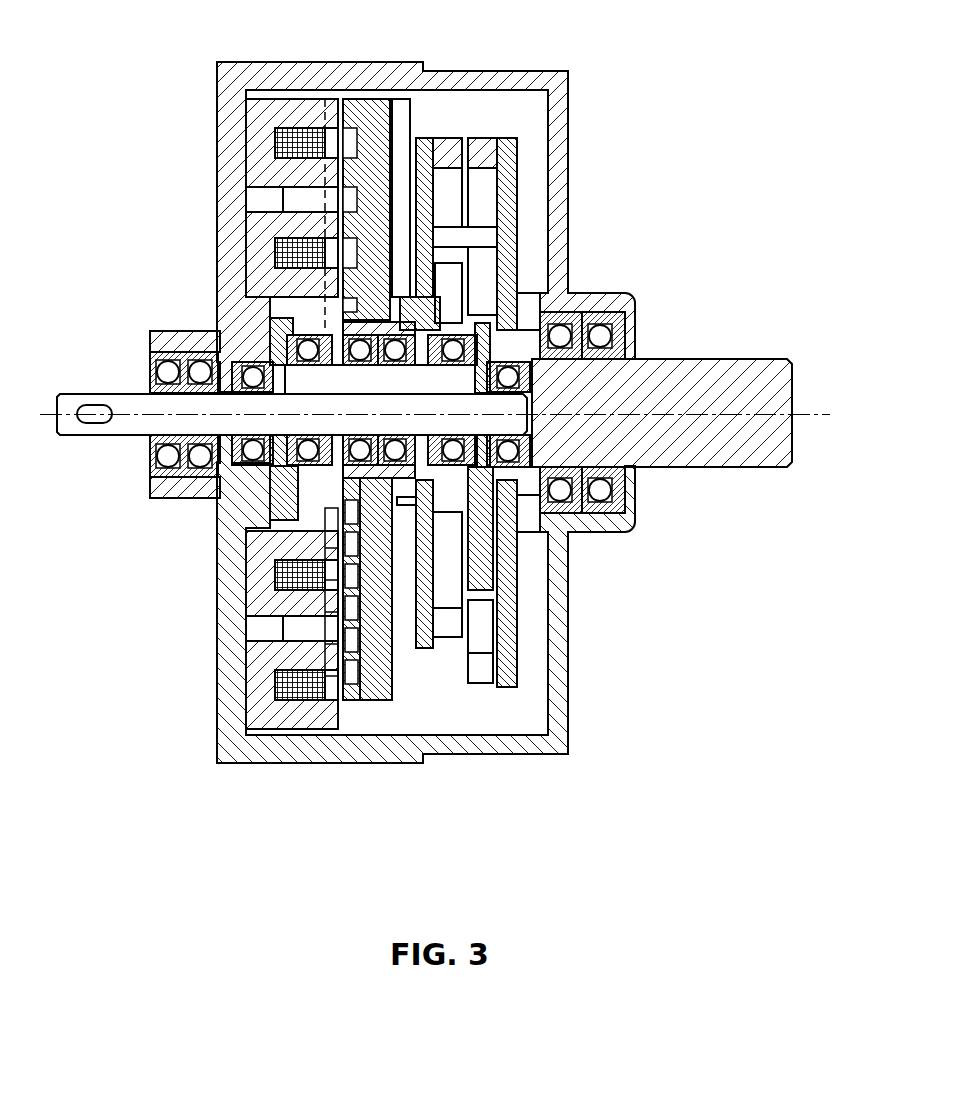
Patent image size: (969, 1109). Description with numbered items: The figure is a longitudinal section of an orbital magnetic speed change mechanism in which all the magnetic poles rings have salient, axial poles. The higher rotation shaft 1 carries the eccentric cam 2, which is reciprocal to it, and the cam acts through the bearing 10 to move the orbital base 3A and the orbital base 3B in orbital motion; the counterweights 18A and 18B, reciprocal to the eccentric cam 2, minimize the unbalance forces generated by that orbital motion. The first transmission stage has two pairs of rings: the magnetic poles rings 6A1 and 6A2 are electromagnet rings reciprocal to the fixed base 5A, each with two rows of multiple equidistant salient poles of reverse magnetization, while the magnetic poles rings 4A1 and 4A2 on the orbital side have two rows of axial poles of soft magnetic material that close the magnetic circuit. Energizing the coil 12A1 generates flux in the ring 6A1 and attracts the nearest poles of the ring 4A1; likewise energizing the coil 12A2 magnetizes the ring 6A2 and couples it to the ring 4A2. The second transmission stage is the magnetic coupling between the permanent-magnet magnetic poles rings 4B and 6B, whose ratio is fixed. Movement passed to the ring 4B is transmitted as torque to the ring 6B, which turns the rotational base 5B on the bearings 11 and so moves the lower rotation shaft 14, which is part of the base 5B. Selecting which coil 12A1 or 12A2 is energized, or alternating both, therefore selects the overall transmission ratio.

The higher rotation shaft 1 is at (118, 425).
The eccentric cam 2 is at (273, 362).
The orbital base 3A is at (377, 683).
The orbital base 3B is at (433, 140).
The magnetic poles ring 4A1 is at (352, 227).
The magnetic poles ring 4A2 is at (352, 108).
The magnetic poles ring 4B is at (457, 630).
The fixed base 5A is at (240, 80).
The rotational base 5B is at (507, 180).
The magnetic poles ring 6A1 is at (258, 255).
The magnetic poles ring 6A2 is at (258, 170).
The magnetic poles ring 6B is at (487, 677).
The bearing 10 is at (330, 385).
The bearings 11 is at (600, 337).
The coil 12A1 is at (285, 570).
The coil 12A2 is at (290, 685).
The lower rotation shaft 14 is at (710, 478).
The counterweight 18A is at (282, 495).
The counterweight 18B is at (485, 568).